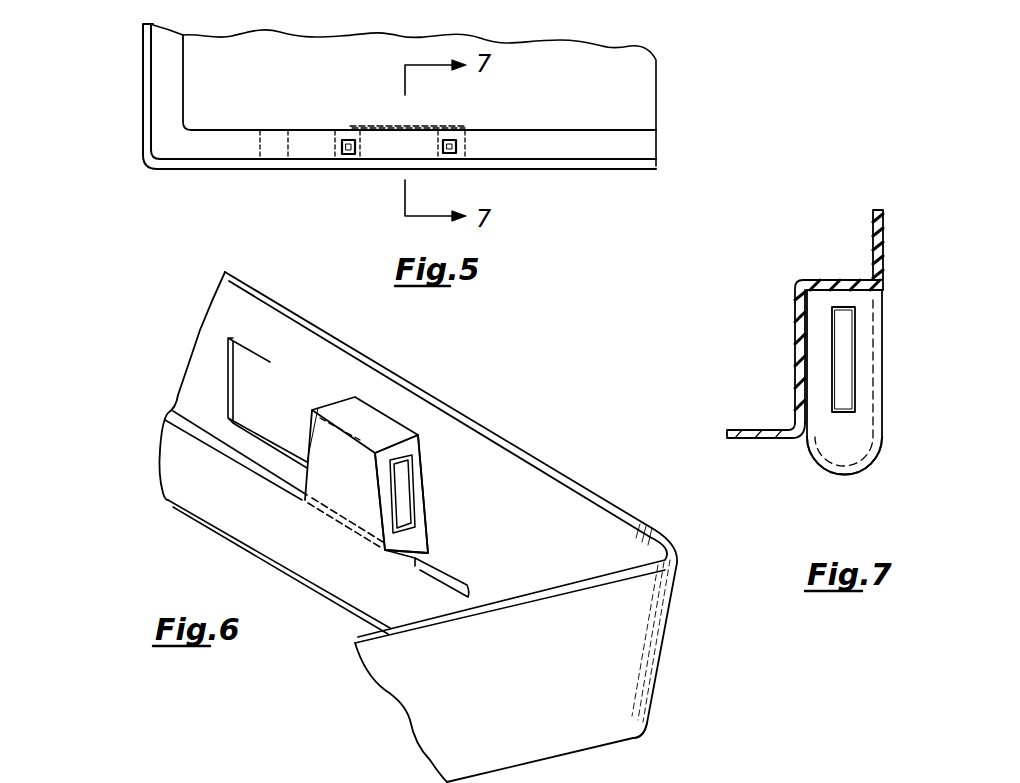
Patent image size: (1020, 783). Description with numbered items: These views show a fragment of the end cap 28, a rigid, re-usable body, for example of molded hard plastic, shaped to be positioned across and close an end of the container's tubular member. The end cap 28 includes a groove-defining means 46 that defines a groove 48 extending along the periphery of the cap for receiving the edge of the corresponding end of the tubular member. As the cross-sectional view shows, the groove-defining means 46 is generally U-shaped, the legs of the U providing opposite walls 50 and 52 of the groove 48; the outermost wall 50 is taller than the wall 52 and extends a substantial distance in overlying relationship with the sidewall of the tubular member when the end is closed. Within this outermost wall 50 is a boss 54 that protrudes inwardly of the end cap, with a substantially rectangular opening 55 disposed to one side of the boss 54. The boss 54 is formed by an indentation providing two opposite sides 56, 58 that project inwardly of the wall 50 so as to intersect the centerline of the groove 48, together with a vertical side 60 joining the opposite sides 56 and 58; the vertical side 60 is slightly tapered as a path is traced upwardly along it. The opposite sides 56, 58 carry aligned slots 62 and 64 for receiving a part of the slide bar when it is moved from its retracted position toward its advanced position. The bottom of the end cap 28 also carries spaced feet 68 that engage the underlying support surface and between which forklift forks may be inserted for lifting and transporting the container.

In FIG. 5, the end cap 28 is at (142, 97).
In FIG. 6, the end cap 28 is at (620, 647).
In FIG. 7, the end cap 28 is at (885, 213).
In FIG. 5, the groove-defining means 46 is at (680, 113).
In FIG. 7, the groove-defining means 46 is at (887, 428).
In FIG. 5, the groove 48 is at (511, 145).
In FIG. 7, the groove 48 is at (868, 470).
In FIG. 5, the outermost wall 50 is at (303, 169).
In FIG. 7, the outermost wall 50 is at (885, 387).
In FIG. 7, the wall 52 is at (802, 447).
In FIG. 5, the boss 54 is at (422, 128).
In FIG. 6, the boss 54 is at (373, 423).
In FIG. 7, the boss 54 is at (800, 353).
In FIG. 6, the rectangular opening 55 is at (247, 350).
In FIG. 5, the opposite side 56 is at (353, 130).
In FIG. 6, the opposite side 56 is at (417, 467).
In FIG. 5, the opposite side 58 is at (460, 130).
In FIG. 6, the opposite side 58 is at (315, 407).
In FIG. 5, the vertical side 60 is at (377, 128).
In FIG. 6, the vertical side 60 is at (338, 502).
In FIG. 6, the slot 62 is at (415, 508).
In FIG. 7, the slot 64 is at (878, 359).
In FIG. 6, the feet 68 is at (618, 723).